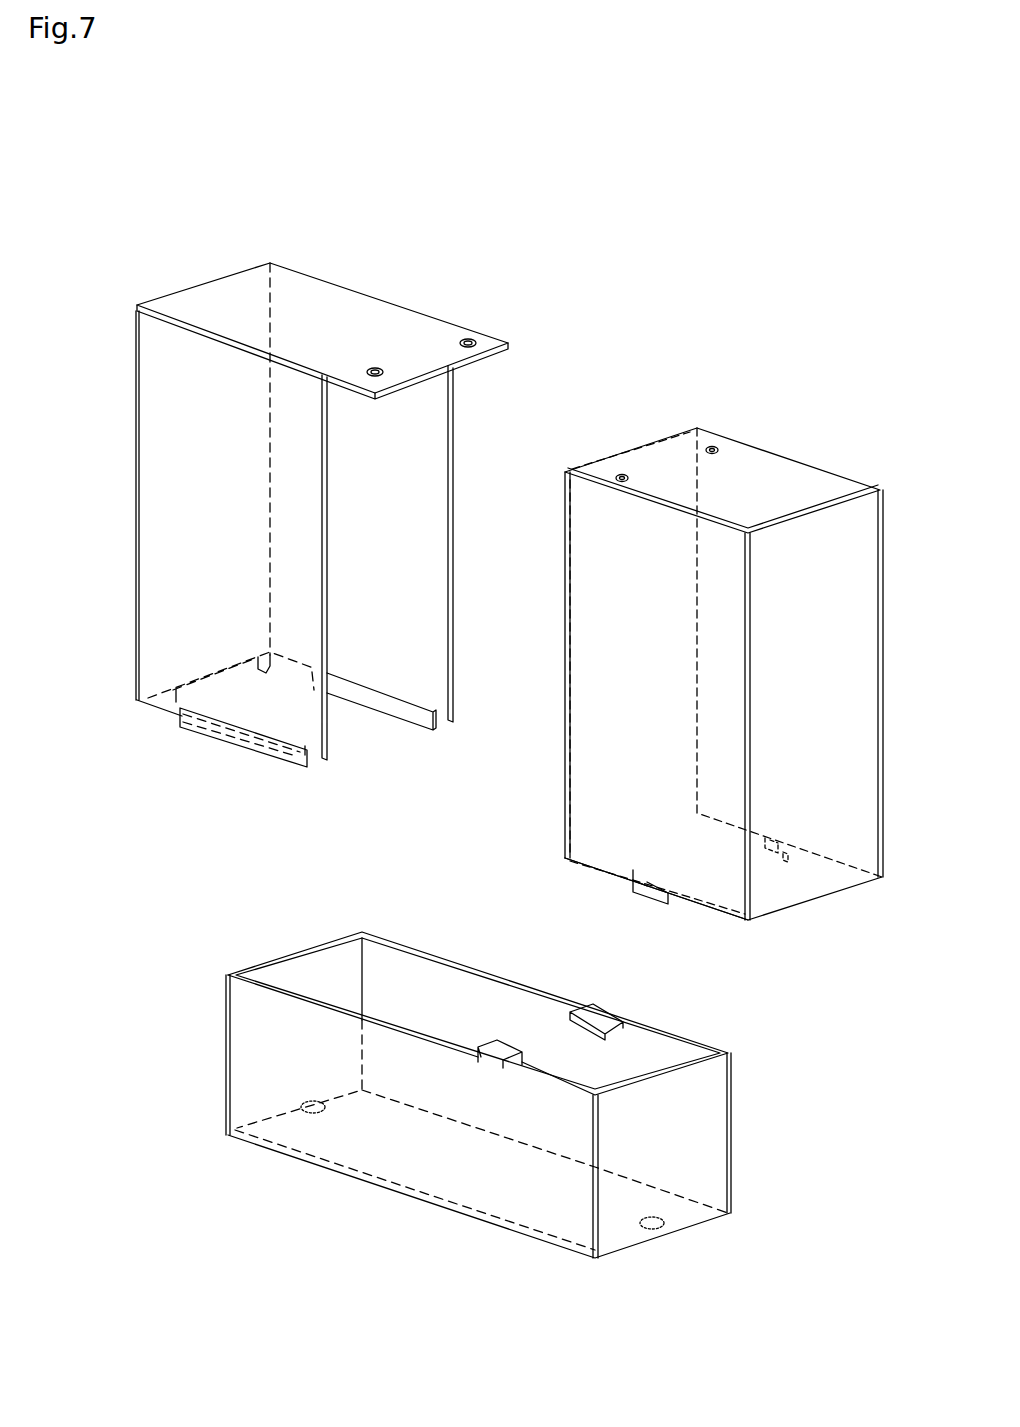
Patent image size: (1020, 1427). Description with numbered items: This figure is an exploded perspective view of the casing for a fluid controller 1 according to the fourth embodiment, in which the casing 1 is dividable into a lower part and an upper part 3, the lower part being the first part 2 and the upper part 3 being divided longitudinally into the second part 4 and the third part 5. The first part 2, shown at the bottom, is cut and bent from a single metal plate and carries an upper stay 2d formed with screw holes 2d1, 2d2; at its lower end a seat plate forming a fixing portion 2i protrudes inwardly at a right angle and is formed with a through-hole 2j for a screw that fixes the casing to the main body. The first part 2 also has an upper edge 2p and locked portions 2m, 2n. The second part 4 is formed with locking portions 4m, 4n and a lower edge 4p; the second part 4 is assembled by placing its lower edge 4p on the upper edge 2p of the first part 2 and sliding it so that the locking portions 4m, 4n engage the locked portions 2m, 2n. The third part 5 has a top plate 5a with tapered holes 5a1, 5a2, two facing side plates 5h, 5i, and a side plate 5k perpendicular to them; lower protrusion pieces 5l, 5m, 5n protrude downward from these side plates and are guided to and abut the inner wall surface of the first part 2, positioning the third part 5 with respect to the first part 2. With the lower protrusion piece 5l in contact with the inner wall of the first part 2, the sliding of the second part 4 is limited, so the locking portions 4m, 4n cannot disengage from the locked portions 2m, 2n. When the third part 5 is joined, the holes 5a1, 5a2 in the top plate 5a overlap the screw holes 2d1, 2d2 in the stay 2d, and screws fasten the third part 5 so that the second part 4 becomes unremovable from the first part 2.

The casing for a fluid controller 1 is at (797, 231).
The first part 2 is at (738, 1110).
The upper stay 2d is at (785, 480).
The screw hole 2d1 is at (620, 474).
The screw hole 2d2 is at (710, 446).
The fixing portion 2i is at (656, 1236).
The through-hole 2j is at (305, 1100).
The locked portion 2m is at (578, 1012).
The locked portion 2n is at (492, 1040).
The upper edge 2p is at (270, 948).
The upper part 3 is at (553, 298).
The second part 4 is at (741, 425).
The locking portion 4m is at (778, 857).
The locking portion 4n is at (648, 903).
The lower edge 4p is at (565, 858).
The third part 5 is at (477, 412).
The top plate 5a is at (250, 298).
The tapered hole 5a1 is at (374, 366).
The tapered hole 5a2 is at (468, 338).
The side plate 5h is at (167, 467).
The side plate 5i is at (440, 520).
The side plate 5k is at (270, 666).
The lower protrusion piece 5l is at (205, 668).
The lower protrusion piece 5m is at (385, 712).
The lower protrusion piece 5n is at (270, 762).